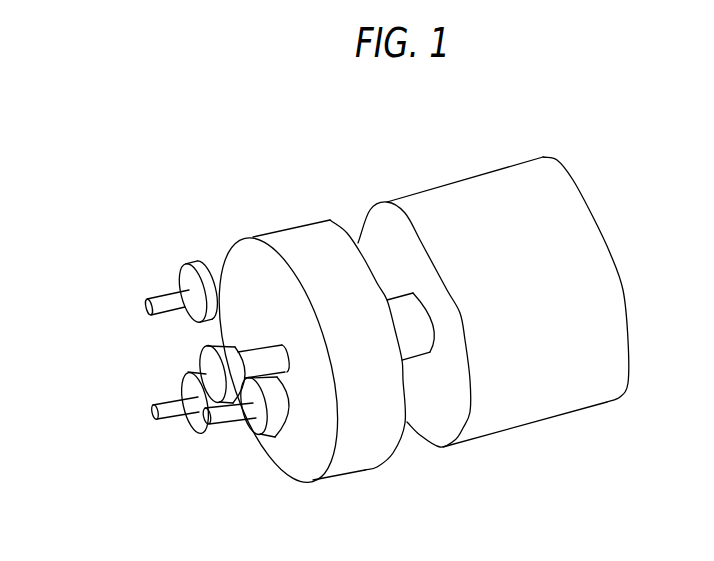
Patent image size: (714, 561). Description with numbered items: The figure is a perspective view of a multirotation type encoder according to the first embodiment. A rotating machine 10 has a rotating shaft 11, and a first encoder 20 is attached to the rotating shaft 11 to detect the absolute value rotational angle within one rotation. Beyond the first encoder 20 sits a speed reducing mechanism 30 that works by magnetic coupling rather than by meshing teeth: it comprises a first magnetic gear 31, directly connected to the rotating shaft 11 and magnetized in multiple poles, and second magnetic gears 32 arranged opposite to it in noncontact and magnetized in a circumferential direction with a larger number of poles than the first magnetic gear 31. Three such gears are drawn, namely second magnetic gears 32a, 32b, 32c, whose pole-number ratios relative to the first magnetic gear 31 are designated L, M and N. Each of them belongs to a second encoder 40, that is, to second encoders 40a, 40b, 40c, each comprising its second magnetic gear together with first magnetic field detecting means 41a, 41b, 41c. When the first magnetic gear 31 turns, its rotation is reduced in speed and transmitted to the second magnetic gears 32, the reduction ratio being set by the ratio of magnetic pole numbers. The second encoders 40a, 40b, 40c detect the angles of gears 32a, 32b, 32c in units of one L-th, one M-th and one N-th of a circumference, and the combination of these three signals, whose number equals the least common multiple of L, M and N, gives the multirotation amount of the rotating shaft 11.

The rotating machine 10 is at (570, 240).
The rotating shaft 11 is at (413, 333).
The first encoder 20 is at (333, 243).
The speed reducing mechanism 30 is at (143, 443).
The first magnetic gear 31 is at (213, 430).
The second magnetic gear 32 is at (220, 222).
The second magnetic gear 32a is at (203, 263).
The second magnetic gear 32b is at (280, 427).
The second magnetic gear 32c is at (193, 371).
The second encoder 40 is at (118, 251).
The second encoder 40a is at (108, 292).
The second encoder 40b is at (238, 473).
The second encoder 40c is at (123, 400).
The first magnetic field detecting means 41a is at (187, 277).
The first magnetic field detecting means 41b is at (248, 437).
The first magnetic field detecting means 41c is at (188, 388).